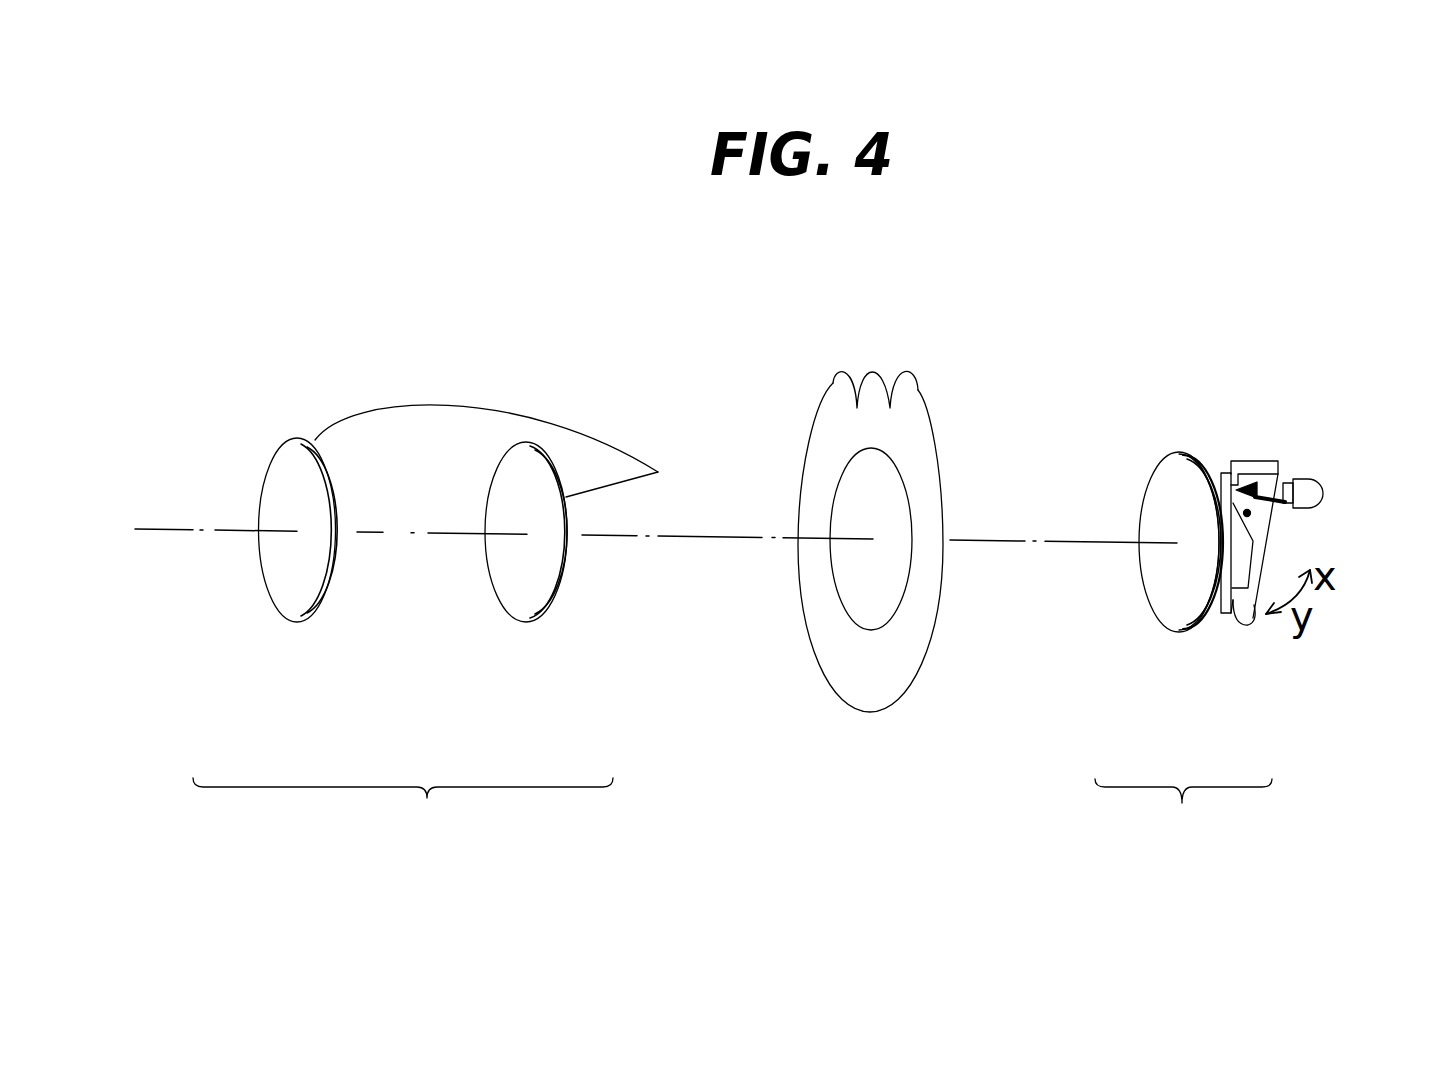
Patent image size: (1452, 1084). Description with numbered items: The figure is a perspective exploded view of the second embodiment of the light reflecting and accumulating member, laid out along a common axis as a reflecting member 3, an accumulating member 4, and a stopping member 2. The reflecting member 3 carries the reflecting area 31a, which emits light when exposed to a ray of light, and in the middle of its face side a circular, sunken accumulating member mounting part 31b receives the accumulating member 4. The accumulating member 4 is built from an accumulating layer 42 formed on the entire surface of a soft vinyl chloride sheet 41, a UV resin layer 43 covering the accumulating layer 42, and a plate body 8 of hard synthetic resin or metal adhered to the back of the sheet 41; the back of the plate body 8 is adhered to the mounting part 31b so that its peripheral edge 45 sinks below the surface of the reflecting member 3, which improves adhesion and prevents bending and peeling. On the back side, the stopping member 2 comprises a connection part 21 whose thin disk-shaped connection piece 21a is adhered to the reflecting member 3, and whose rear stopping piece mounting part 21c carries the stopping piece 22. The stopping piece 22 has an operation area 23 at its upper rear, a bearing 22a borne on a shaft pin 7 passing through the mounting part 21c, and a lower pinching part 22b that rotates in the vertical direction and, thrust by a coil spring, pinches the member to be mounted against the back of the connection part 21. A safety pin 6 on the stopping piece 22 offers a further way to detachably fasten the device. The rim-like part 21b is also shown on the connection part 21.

The stopping member 2 is at (1183, 825).
The reflecting member 3 is at (800, 553).
The accumulating member 4 is at (403, 829).
The safety pin 6 is at (1303, 493).
The shaft pin 7 is at (1258, 518).
The plate body 8 is at (547, 615).
The connection part 21 is at (1175, 630).
The connection piece 21a is at (1173, 482).
The lens rim 21b is at (1187, 453).
The stopping piece mounting part 21c is at (1218, 478).
The stopping piece 22 is at (1240, 620).
The bearing 22a is at (1257, 519).
The pinching part 22b is at (1250, 613).
The operation area 23 is at (1285, 473).
The reflecting area 31a is at (840, 395).
The accumulating member mounting part 31b is at (867, 512).
The soft vinyl chloride sheet 41 is at (335, 588).
The accumulating layer 42 is at (328, 593).
The UV resin layer 43 is at (305, 573).
The peripheral edge 45 is at (511, 455).